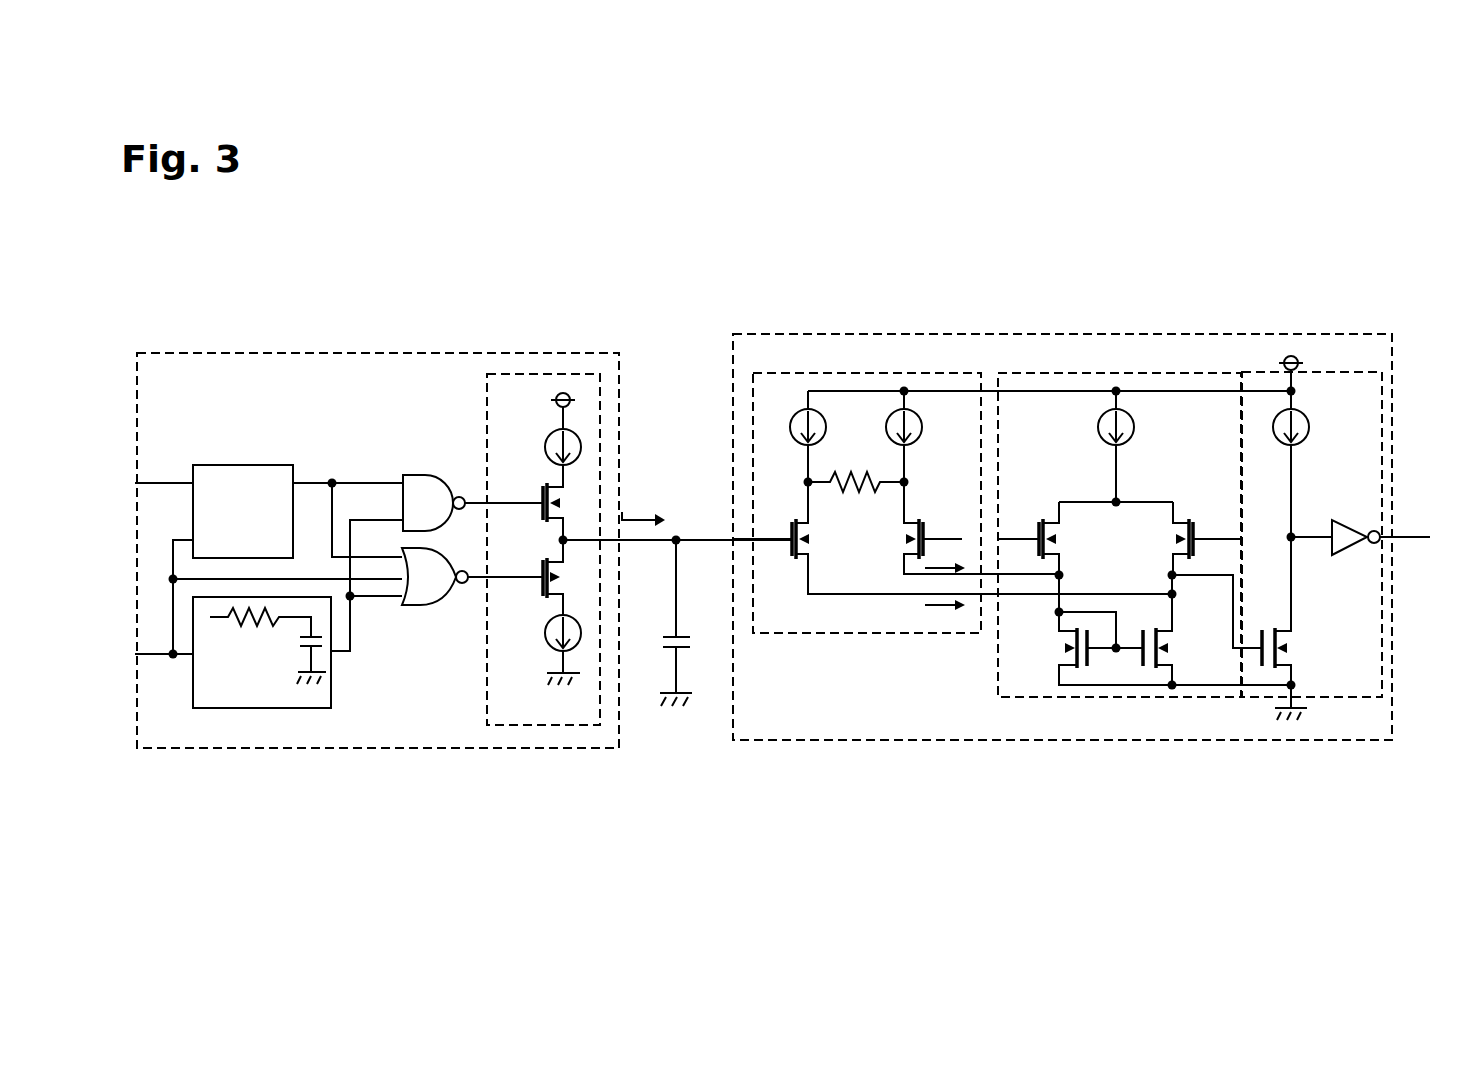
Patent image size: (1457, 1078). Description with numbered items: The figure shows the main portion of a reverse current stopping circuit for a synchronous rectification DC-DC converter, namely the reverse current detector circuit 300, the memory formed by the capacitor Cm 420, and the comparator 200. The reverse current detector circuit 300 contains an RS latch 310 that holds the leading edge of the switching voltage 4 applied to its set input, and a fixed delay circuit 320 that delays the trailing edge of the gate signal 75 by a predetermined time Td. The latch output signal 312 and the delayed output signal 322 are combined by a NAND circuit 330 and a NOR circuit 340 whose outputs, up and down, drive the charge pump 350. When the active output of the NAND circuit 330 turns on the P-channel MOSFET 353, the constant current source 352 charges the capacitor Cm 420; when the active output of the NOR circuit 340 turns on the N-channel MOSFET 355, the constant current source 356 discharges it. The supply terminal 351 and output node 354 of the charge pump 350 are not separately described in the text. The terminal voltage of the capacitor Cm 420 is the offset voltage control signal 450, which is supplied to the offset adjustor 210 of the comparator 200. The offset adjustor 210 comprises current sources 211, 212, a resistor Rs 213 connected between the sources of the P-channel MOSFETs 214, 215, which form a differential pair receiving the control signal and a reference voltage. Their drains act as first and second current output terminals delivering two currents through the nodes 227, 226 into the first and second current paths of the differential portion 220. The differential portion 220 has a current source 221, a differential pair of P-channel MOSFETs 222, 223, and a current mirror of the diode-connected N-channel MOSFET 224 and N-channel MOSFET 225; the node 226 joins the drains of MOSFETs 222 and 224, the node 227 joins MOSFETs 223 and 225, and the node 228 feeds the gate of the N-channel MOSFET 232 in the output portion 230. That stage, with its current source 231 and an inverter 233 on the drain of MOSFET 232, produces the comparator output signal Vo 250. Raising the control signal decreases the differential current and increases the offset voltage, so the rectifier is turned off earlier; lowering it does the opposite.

The Vsw 4 is at (163, 483).
The Vgn 75 is at (160, 654).
The comparator 200 is at (1112, 741).
The offset adjustor 210 is at (885, 634).
The current source 211 is at (826, 420).
The current source 212 is at (922, 420).
The resistor Rs 213 is at (858, 488).
The P-channel MOSFET 214 is at (800, 556).
The P-channel MOSFET 215 is at (896, 560).
The differential portion 220 is at (1100, 373).
The current source 221 is at (1134, 420).
The P-channel MOSFET 222 is at (1050, 558).
The P-channel MOSFET 223 is at (1178, 542).
The diode-connected N-channel MOSFET 224 is at (1064, 640).
The N-channel MOSFET 225 is at (1168, 652).
The node 226 is at (1062, 578).
The node 227 is at (1176, 596).
The node 228 is at (1176, 576).
The output portion 230 is at (1312, 369).
The current source 231 is at (1309, 420).
The N-channel MOSFET 232 is at (1296, 650).
The inverter 233 is at (1352, 556).
The output signal Vo 250 is at (1408, 540).
The reverse current detector circuit 300 is at (340, 353).
The RS latch 310 is at (292, 463).
The output signal Vsw' 312 is at (325, 487).
The delay circuit 320 is at (252, 710).
The output signal Vgn' 322 is at (345, 658).
The NAND circuit 330 is at (427, 474).
The NOR circuit 340 is at (436, 604).
The charge pump 350 is at (545, 373).
The supply terminal 351 is at (577, 397).
The constant current source 352 is at (582, 447).
The P-channel MOSFET 353 is at (550, 505).
The output node 354 is at (560, 540).
The N-channel MOSFET 355 is at (553, 580).
The constant current source 356 is at (545, 650).
The capacitor Cm 420 is at (663, 636).
The offset voltage control signal Vctrl 450 is at (733, 545).